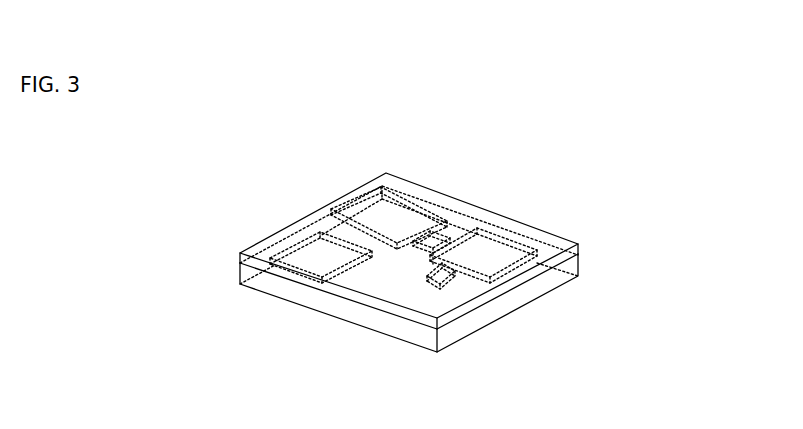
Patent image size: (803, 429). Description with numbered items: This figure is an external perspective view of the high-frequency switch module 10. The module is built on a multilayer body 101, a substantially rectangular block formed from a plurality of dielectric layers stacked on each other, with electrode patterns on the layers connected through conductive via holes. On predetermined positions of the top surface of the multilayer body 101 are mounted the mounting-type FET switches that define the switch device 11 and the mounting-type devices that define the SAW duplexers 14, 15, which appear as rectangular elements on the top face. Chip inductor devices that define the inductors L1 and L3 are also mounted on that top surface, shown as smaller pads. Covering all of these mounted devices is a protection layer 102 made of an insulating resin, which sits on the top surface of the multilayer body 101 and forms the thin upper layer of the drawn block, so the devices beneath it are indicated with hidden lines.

The high-frequency switch module 10 is at (546, 118).
The switch device 11 is at (292, 242).
The SAW duplexer 14 is at (397, 205).
The SAW duplexer 15 is at (495, 238).
The multilayer body 101 is at (566, 278).
The protection layer 102 is at (579, 246).
The inductor L1 is at (441, 229).
The inductor L3 is at (453, 283).